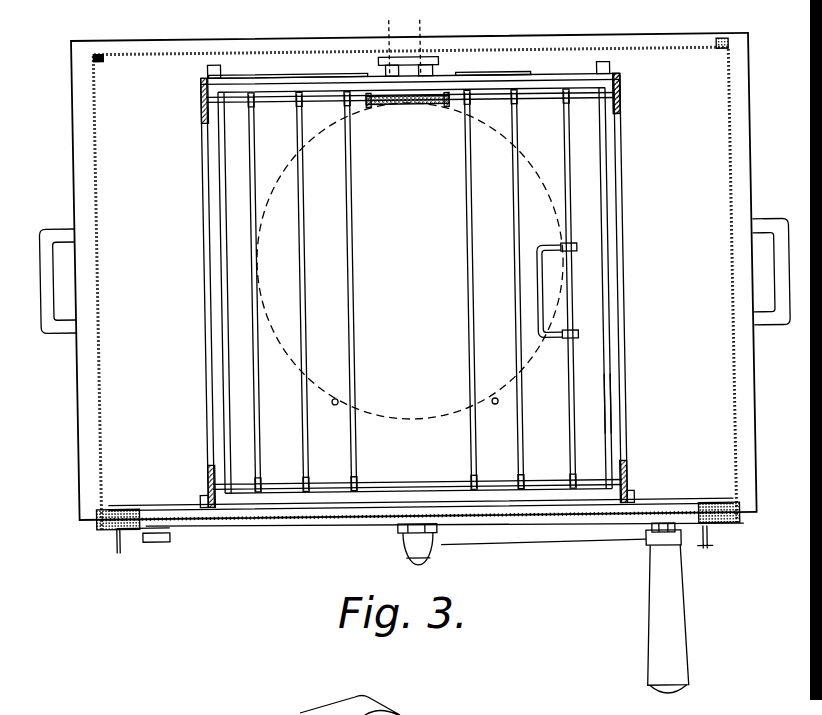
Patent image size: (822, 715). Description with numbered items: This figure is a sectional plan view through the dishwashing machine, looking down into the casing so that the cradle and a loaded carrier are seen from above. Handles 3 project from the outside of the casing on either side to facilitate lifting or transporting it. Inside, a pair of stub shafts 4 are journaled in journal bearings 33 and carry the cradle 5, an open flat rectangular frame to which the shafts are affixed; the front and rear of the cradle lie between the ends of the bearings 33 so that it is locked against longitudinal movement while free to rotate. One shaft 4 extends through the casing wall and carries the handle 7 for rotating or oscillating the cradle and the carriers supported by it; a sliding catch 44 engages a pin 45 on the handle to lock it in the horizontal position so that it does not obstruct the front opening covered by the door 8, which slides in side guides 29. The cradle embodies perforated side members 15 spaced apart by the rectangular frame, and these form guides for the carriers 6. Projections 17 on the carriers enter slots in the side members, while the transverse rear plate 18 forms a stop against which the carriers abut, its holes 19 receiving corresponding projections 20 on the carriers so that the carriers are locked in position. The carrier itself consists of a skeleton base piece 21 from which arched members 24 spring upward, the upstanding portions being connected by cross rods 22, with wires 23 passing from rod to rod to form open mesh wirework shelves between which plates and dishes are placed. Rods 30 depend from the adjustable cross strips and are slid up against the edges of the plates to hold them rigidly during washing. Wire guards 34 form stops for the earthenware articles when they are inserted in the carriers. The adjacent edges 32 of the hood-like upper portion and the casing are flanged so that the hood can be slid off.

The handles 3 is at (44, 282).
The stub shafts 4 is at (386, 560).
The cradle 5 is at (613, 303).
The carriers 6 is at (598, 206).
The handle 7 is at (665, 643).
The door 8 is at (305, 523).
The side members 15 is at (198, 335).
The projections 17 is at (195, 502).
The transverse rear plate 18 is at (530, 68).
The holes 19 is at (616, 103).
The projections 20 is at (206, 75).
The skeleton base piece 21 is at (600, 418).
The cross rods 22 is at (543, 106).
The wires 23 is at (347, 293).
The arched members 24 is at (203, 114).
The side guides 29 is at (106, 531).
The rods 30 is at (328, 408).
The adjacent edges 32 is at (738, 178).
The journal bearings 33 is at (427, 71).
The wire guards 34 is at (397, 110).
The sliding catch 44 is at (141, 541).
The pin 45 is at (649, 551).